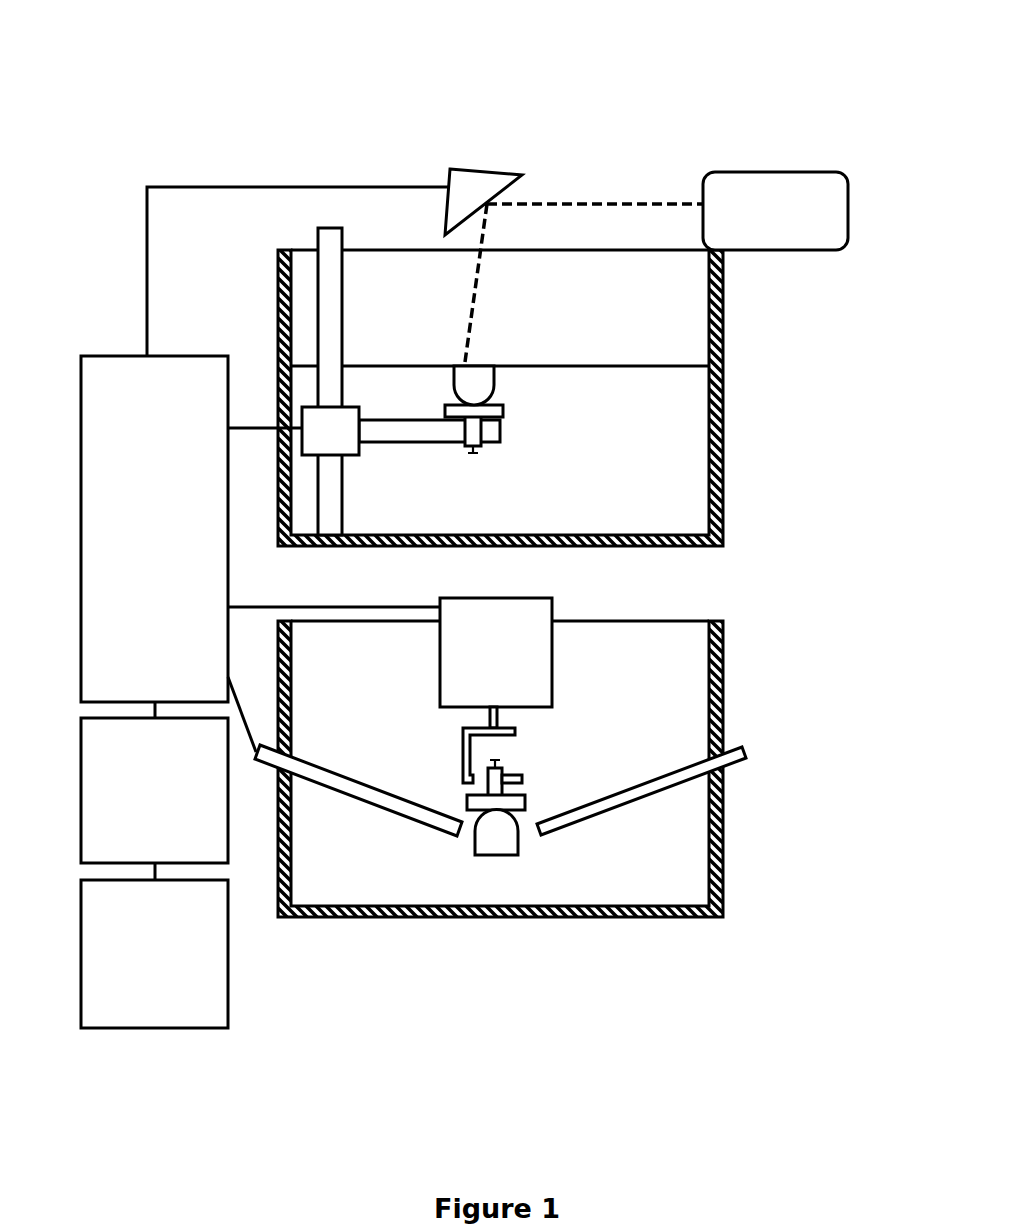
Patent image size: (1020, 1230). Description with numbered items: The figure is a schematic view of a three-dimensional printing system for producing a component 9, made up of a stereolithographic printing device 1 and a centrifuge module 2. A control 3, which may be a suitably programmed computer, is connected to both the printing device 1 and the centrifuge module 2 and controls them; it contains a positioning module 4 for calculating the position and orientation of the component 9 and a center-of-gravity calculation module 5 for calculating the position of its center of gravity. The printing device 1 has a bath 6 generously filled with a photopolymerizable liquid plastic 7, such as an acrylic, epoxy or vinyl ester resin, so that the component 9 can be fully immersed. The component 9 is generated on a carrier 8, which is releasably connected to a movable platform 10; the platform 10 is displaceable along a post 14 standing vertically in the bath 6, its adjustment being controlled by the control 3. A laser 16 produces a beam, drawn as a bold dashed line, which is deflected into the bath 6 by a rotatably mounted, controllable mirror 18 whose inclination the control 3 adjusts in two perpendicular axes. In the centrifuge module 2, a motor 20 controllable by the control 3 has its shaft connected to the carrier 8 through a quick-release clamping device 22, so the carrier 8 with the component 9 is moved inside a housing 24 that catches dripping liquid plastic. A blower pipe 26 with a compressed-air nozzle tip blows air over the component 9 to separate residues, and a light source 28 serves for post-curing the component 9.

The stereolithographic printing device 1 is at (374, 75).
The centrifuge module 2 is at (532, 1005).
The control 3 is at (154, 529).
The positioning module 4 is at (154, 790).
The center-of-gravity calculation module 5 is at (154, 954).
The bath 6 is at (722, 400).
The liquid plastic 7 is at (657, 383).
The carrier 8 is at (503, 416).
The component 9 is at (475, 380).
The platform 10 is at (488, 432).
The post 14 is at (330, 282).
The laser 16 is at (775, 211).
The mirror 18 is at (470, 190).
The motor 20 is at (500, 647).
The quick-release clamping device 22 is at (470, 756).
The housing 24 is at (722, 798).
The blower pipe 26 is at (667, 782).
The light source 28 is at (383, 799).